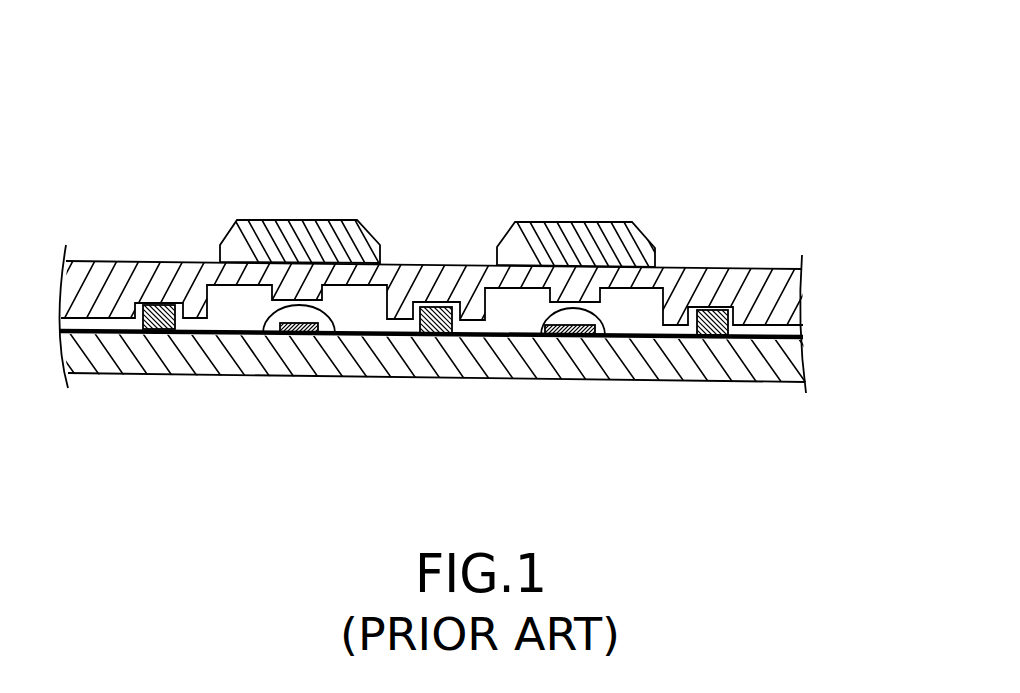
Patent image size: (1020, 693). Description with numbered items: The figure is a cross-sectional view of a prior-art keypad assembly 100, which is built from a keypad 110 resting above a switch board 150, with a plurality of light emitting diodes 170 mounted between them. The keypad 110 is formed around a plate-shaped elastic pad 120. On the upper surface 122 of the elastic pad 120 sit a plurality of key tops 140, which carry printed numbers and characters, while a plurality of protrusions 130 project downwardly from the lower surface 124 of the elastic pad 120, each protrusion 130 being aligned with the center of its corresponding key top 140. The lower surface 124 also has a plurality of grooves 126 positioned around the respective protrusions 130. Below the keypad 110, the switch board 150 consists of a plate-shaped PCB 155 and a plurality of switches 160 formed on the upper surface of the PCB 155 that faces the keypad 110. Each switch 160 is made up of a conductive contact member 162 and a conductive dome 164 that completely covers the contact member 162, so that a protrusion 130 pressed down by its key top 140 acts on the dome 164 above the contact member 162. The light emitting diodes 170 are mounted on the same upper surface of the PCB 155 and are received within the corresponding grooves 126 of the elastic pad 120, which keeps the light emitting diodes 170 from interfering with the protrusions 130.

The keypad assembly 100 is at (498, 59).
The keypad 110 is at (444, 292).
The elastic pad 120 is at (790, 289).
The upper surface 122 is at (748, 268).
The lower surface 124 is at (780, 316).
The grooves 126 is at (713, 306).
The protrusions 130 is at (577, 297).
The key tops 140 is at (541, 228).
The switch board 150 is at (460, 388).
The PCB 155 is at (785, 362).
The switch 160 is at (615, 322).
The contact member 162 is at (570, 340).
The conductive dome 164 is at (540, 330).
The light emitting diodes 170 is at (706, 340).